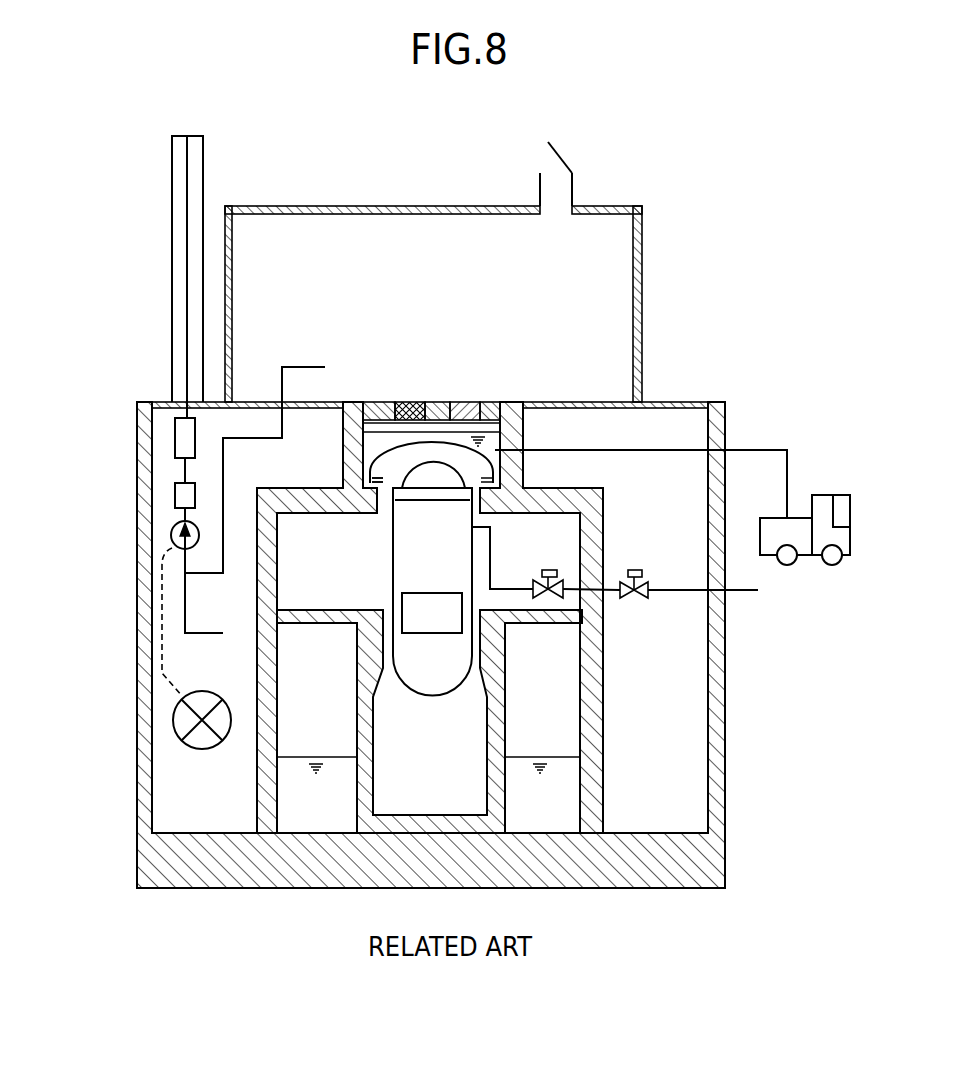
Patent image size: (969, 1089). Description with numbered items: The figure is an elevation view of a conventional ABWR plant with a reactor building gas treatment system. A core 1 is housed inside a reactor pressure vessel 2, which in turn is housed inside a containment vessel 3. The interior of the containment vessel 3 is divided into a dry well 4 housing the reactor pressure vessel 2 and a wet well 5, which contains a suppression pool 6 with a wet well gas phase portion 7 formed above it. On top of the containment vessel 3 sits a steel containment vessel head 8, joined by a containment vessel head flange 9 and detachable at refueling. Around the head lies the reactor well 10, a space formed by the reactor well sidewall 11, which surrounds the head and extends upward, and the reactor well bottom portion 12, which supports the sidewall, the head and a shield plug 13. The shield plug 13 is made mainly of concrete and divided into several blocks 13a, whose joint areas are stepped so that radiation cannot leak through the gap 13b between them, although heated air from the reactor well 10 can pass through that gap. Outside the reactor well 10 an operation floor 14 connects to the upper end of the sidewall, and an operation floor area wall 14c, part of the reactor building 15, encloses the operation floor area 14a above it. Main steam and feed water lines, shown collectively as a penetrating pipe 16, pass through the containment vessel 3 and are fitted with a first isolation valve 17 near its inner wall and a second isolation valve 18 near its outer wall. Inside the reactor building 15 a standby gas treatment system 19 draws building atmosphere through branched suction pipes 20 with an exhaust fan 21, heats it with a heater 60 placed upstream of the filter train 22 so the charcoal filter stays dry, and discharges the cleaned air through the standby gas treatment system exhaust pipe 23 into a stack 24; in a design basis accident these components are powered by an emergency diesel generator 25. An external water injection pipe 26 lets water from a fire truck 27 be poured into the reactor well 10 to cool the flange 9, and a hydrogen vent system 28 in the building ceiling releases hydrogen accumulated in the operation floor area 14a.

The core 1 is at (432, 613).
The reactor pressure vessel 2 is at (392, 568).
The containment vessel 3 is at (258, 490).
The dry well 4 is at (335, 561).
The wet well 5 is at (563, 690).
The suppression pool 6 is at (563, 802).
The wet well gas phase portion 7 is at (317, 723).
The containment vessel head 8 is at (372, 412).
The containment vessel head flange 9 is at (357, 513).
The reactor well 10 is at (378, 441).
The reactor well sidewall 11 is at (500, 458).
The reactor well bottom portion 12 is at (500, 508).
The shield plug 13 is at (447, 360).
The block 13a is at (485, 405).
The gap 13b is at (422, 402).
The operation floor 14 is at (572, 402).
The operation floor area 14a is at (527, 272).
The operation floor area wall 14c is at (643, 234).
The reactor building 15 is at (428, 197).
The penetrating pipe 16 is at (738, 600).
The first isolation valve 17 is at (548, 598).
The second isolation valve 18 is at (634, 577).
The standby gas treatment system 19 is at (166, 497).
The suction pipes 20 is at (300, 367).
The exhaust fan 21 is at (172, 538).
The filter train 22 is at (175, 435).
The standby gas treatment system exhaust pipe 23 is at (190, 205).
The stack 24 is at (172, 236).
The emergency diesel generator 25 is at (200, 750).
The external water injection pipe 26 is at (761, 449).
The fire truck 27 is at (810, 565).
The hydrogen vent system 28 is at (562, 152).
The heater 60 is at (170, 490).